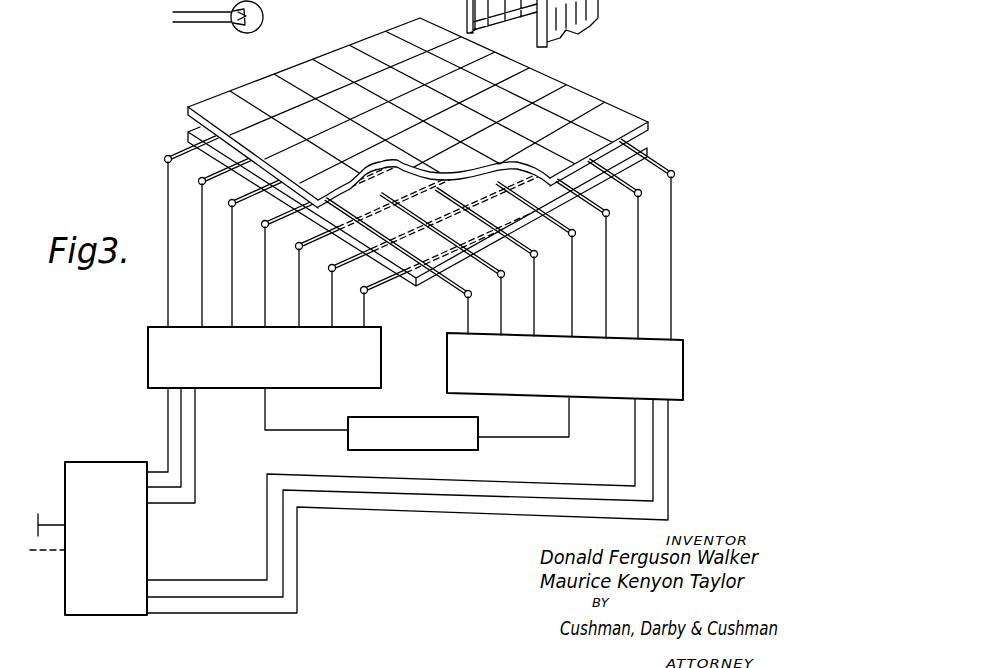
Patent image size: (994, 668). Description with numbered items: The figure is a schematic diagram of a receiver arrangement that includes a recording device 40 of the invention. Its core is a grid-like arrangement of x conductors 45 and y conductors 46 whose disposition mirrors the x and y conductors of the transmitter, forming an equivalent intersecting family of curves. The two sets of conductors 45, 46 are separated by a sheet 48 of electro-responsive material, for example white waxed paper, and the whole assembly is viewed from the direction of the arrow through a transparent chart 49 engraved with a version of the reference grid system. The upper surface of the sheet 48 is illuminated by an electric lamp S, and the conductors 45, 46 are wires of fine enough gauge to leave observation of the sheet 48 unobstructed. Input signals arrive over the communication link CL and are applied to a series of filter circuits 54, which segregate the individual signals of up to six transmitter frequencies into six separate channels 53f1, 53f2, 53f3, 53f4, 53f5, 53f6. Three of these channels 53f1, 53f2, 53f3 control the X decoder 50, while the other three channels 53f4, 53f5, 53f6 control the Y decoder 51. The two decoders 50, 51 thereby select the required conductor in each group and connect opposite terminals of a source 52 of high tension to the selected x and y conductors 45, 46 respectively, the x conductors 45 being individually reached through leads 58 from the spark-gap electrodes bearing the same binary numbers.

The display device 40 is at (608, 89).
The x conductors 45 is at (170, 183).
The y conductors 46 is at (374, 264).
The sheet of electro-responsive material 48 is at (641, 144).
The transparent chart 49 is at (225, 97).
The X decoder 50 is at (447, 349).
The Y decoder 51 is at (381, 380).
The source of high tension 52 is at (462, 451).
The channel 53f1 is at (342, 510).
The channel 53f2 is at (420, 495).
The channel 53f3 is at (497, 482).
The channel 53f4 is at (165, 504).
The channel 53f5 is at (181, 487).
The channel 53f6 is at (168, 431).
The filter circuits 54 is at (103, 471).
The leads 58 is at (202, 301).
The electric lamp S is at (265, 15).
The communication link CL is at (46, 520).